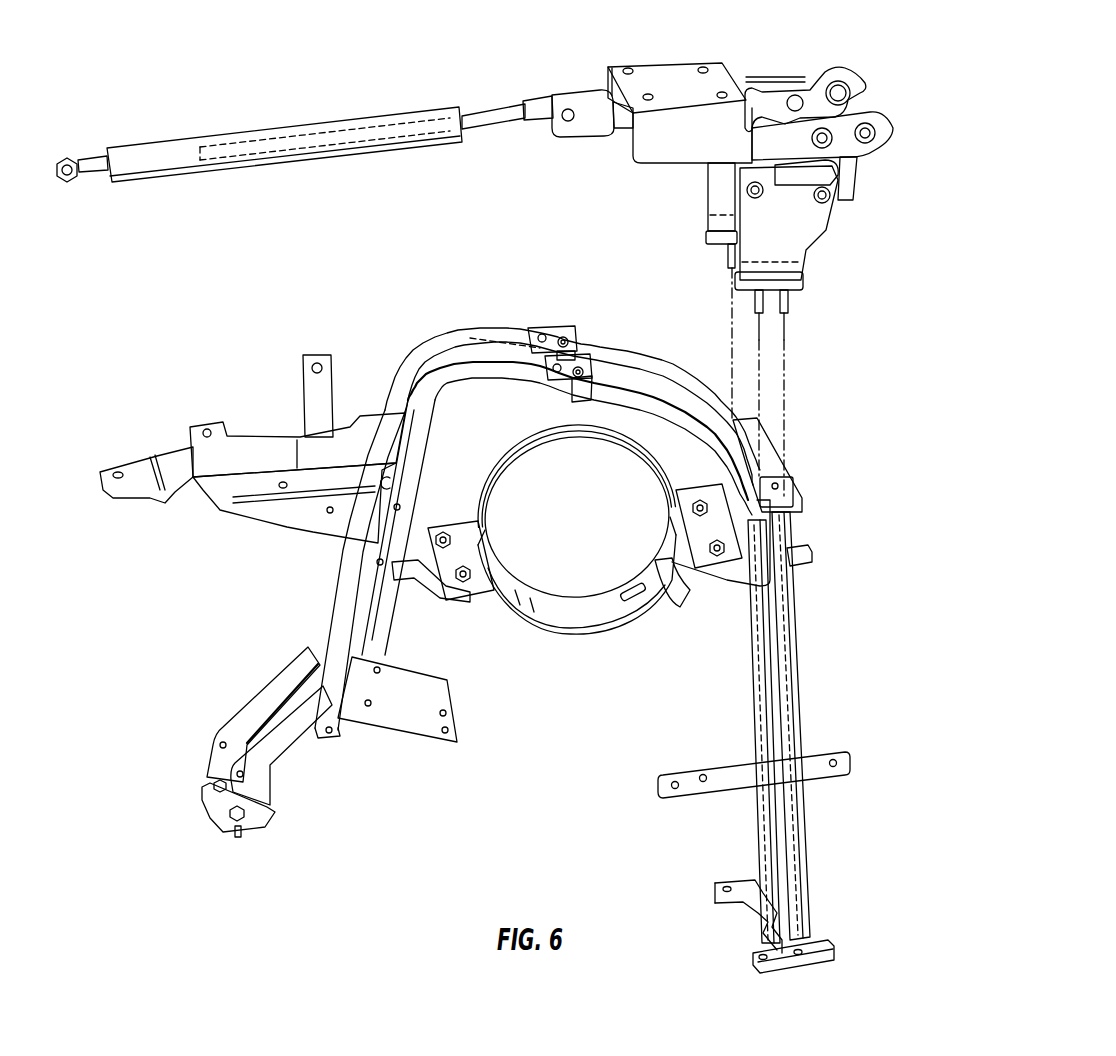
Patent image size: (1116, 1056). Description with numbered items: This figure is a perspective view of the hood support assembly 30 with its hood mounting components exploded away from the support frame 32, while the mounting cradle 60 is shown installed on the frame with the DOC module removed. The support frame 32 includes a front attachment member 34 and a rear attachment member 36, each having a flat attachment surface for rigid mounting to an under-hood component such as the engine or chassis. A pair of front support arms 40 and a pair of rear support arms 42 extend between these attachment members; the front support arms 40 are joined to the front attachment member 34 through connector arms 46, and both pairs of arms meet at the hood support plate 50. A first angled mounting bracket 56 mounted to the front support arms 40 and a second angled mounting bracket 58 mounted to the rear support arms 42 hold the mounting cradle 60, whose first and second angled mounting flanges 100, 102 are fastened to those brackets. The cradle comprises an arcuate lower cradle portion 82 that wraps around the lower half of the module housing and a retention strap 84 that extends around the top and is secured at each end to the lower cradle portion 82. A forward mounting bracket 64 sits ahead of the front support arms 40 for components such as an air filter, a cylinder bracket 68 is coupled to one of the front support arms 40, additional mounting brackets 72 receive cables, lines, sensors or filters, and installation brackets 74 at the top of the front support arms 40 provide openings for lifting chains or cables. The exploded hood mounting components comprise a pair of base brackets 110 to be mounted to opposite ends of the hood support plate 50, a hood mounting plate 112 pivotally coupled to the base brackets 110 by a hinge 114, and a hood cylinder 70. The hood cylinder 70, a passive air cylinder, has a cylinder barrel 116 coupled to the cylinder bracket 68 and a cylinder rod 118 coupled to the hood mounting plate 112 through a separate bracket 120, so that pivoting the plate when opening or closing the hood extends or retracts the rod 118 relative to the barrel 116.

The hood support assembly 30 is at (133, 43).
The support frame 32 is at (129, 741).
The front attachment member 34 is at (268, 800).
The rear attachment member 36 is at (775, 965).
The front support arms 40 is at (340, 607).
The rear support arms 42 is at (765, 698).
The connector arms 46 is at (252, 715).
The hood support plate 50 is at (765, 457).
The first angled mounting bracket 56 is at (455, 538).
The second angled mounting bracket 58 is at (720, 487).
The mounting cradle 60 is at (576, 570).
The forward mounting bracket 64 is at (163, 458).
The cylinder bracket 68 is at (208, 467).
The hood cylinder 70 is at (345, 127).
The mounting brackets 72 is at (317, 392).
The installation brackets 74 is at (543, 328).
The lower cradle portion 82 is at (573, 620).
The retention strap 84 is at (530, 453).
The first angled mounting flange 100 is at (443, 503).
The second angled mounting flange 102 is at (703, 580).
The base brackets 110 is at (783, 243).
The hood mounting plate 112 is at (667, 80).
The hinge 114 is at (840, 173).
The cylinder barrel 116 is at (168, 156).
The cylinder rod 118 is at (490, 113).
The bracket 120 is at (578, 128).